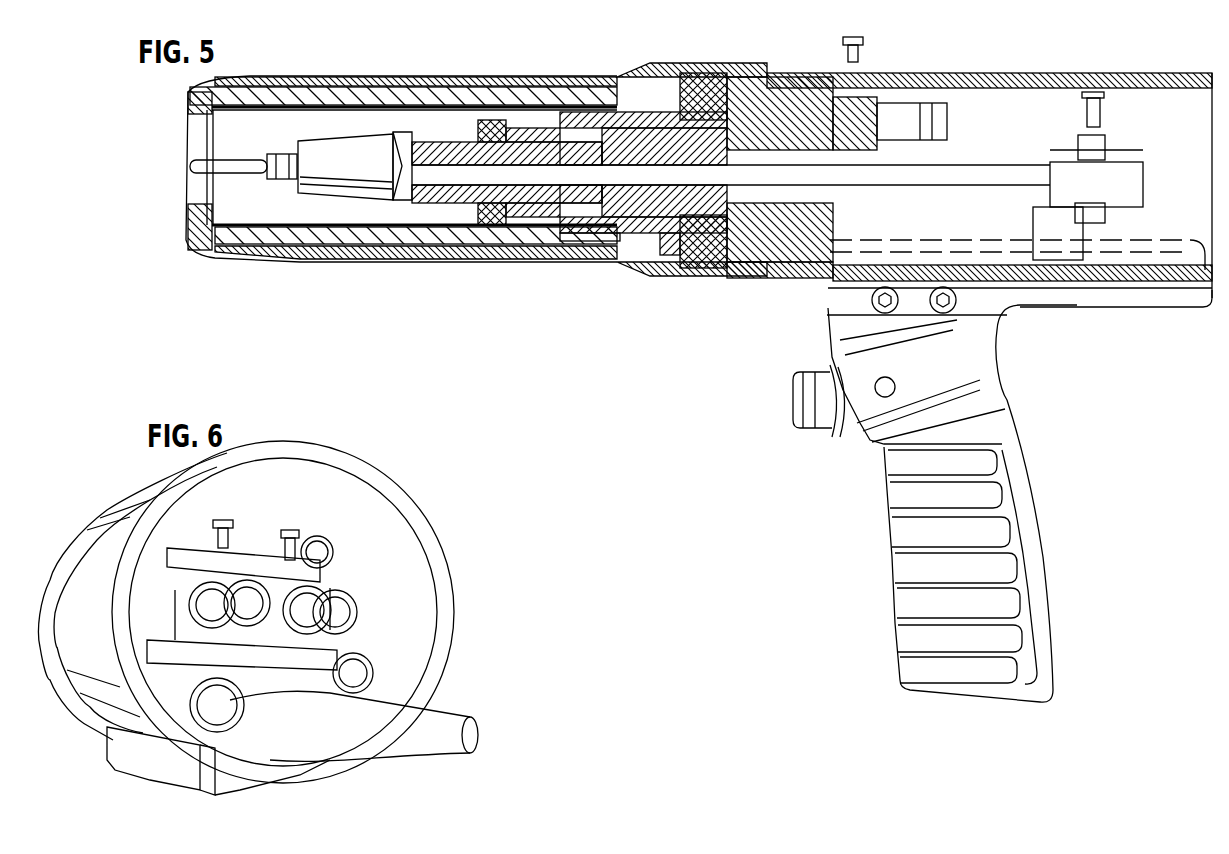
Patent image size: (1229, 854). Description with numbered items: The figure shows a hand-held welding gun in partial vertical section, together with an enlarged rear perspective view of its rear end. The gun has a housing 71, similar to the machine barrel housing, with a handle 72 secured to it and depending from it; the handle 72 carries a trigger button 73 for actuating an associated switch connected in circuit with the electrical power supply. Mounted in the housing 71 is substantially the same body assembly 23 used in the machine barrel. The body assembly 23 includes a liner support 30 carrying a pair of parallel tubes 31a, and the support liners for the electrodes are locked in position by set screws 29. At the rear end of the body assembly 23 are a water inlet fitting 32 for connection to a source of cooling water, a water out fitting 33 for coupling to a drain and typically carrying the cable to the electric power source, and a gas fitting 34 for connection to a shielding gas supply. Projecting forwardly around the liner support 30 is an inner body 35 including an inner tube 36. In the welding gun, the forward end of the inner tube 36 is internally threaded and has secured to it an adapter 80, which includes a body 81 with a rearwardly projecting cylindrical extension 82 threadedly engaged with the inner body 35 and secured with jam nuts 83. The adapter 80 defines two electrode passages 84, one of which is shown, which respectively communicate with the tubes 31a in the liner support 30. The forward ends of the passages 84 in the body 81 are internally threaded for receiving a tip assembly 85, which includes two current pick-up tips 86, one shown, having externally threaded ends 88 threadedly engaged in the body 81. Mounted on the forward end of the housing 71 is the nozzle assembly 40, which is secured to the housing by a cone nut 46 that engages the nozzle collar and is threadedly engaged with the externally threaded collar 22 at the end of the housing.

In FIG. 5, the externally threaded collar 22 is at (802, 280).
In FIG. 5, the body assembly 23 is at (748, 278).
In FIG. 5, the set screws 29 is at (1106, 115).
In FIG. 6, the set screws 29 is at (230, 520).
In FIG. 5, the liner support 30 is at (845, 95).
In FIG. 5, the parallel tubes 31a is at (672, 258).
In FIG. 6, the water inlet fitting 32 is at (334, 548).
In FIG. 6, the water out fitting 33 is at (180, 717).
In FIG. 6, the gas fitting 34 is at (372, 668).
In FIG. 5, the inner body 35 is at (610, 235).
In FIG. 5, the inner tube 36 is at (558, 128).
In FIG. 5, the nozzle assembly 40 is at (400, 70).
In FIG. 5, the cone nut 46 is at (748, 75).
In FIG. 5, the housing 71 is at (1028, 86).
In FIG. 6, the housing 71 is at (380, 475).
In FIG. 5, the handle 72 is at (1040, 512).
In FIG. 5, the trigger button 73 is at (792, 400).
In FIG. 5, the adapter 80 is at (330, 205).
In FIG. 5, the body 81 is at (345, 140).
In FIG. 5, the cylindrical extension 82 is at (475, 222).
In FIG. 5, the jam nuts 83 is at (500, 130).
In FIG. 5, the electrode passages 84 is at (440, 145).
In FIG. 5, the tip assembly 85 is at (245, 187).
In FIG. 5, the current pick-up tips 86 is at (185, 168).
In FIG. 5, the externally threaded ends 88 is at (275, 140).